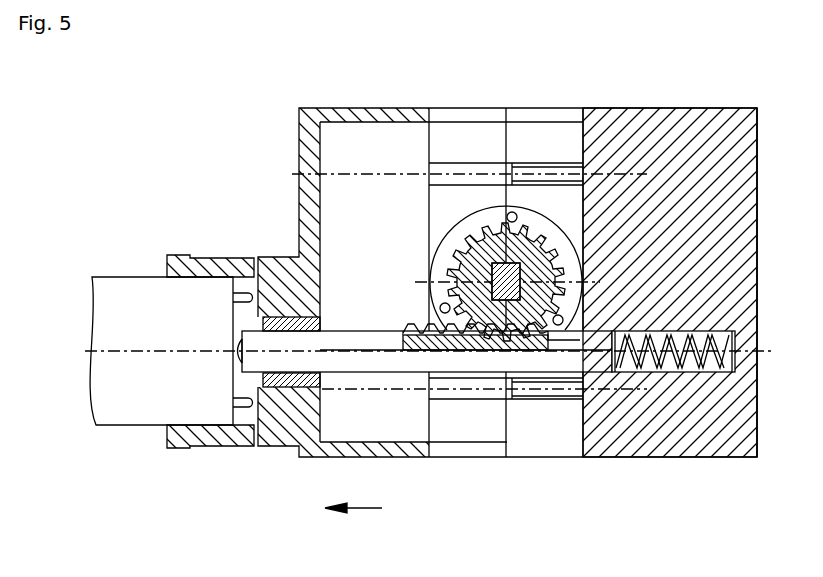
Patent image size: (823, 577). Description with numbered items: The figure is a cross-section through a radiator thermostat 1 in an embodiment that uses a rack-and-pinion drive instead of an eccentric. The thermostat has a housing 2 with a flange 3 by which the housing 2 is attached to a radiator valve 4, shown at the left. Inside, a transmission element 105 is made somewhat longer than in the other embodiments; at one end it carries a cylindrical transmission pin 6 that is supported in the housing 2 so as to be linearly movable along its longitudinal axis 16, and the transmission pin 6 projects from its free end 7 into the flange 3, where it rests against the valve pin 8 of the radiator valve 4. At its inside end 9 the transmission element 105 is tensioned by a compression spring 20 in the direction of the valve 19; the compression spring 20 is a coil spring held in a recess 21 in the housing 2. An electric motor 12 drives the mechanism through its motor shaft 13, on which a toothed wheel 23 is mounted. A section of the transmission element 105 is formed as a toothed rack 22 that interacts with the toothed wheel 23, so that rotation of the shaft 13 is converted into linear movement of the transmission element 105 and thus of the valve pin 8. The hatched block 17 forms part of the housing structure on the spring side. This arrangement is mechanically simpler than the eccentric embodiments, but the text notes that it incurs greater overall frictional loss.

The radiator thermostat 1 is at (145, 190).
The housing 2 is at (272, 277).
The flange 3 is at (210, 445).
The radiator valve 4 is at (123, 390).
The transmission pin 6 is at (293, 362).
The free end 7 is at (238, 338).
The valve pin 8 is at (238, 352).
The inside end 9 is at (618, 330).
The electric motor 12 is at (472, 223).
The motor shaft 13 is at (505, 268).
The longitudinal axis 16 is at (758, 350).
The housing block 17 is at (677, 228).
The valve 19 is at (365, 508).
The compression spring 20 is at (650, 367).
The recess 21 is at (687, 367).
The toothed rack 22 is at (412, 337).
The toothed wheel 23 is at (502, 310).
The transmission element 105 is at (366, 340).